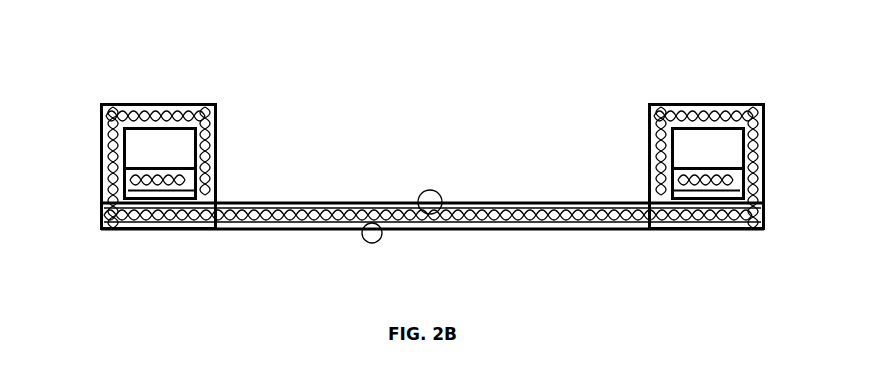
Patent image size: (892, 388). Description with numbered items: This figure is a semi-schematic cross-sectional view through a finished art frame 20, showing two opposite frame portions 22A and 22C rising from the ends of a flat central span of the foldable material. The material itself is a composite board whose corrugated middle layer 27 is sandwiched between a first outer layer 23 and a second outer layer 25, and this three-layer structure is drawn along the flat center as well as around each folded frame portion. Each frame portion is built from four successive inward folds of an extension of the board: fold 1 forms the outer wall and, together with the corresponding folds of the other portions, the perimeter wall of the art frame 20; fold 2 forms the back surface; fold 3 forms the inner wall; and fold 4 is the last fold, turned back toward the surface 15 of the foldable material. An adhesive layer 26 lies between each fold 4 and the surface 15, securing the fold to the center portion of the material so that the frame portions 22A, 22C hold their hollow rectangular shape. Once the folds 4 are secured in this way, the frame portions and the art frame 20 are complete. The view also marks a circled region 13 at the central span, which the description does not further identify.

The fold 1 is at (101, 160).
The fold 2 is at (155, 103).
The fold 3 is at (218, 145).
The fold 4 is at (165, 231).
The lower circled detail 13 is at (378, 224).
The surface 15 is at (430, 214).
The art frame 20 is at (632, 67).
The frame portion 22A is at (767, 197).
The frame portion 22C is at (100, 138).
The first outer layer 23 is at (130, 231).
The second outer layer 25 is at (265, 231).
The adhesive layer 26 is at (213, 200).
The middle layer 27 is at (222, 231).